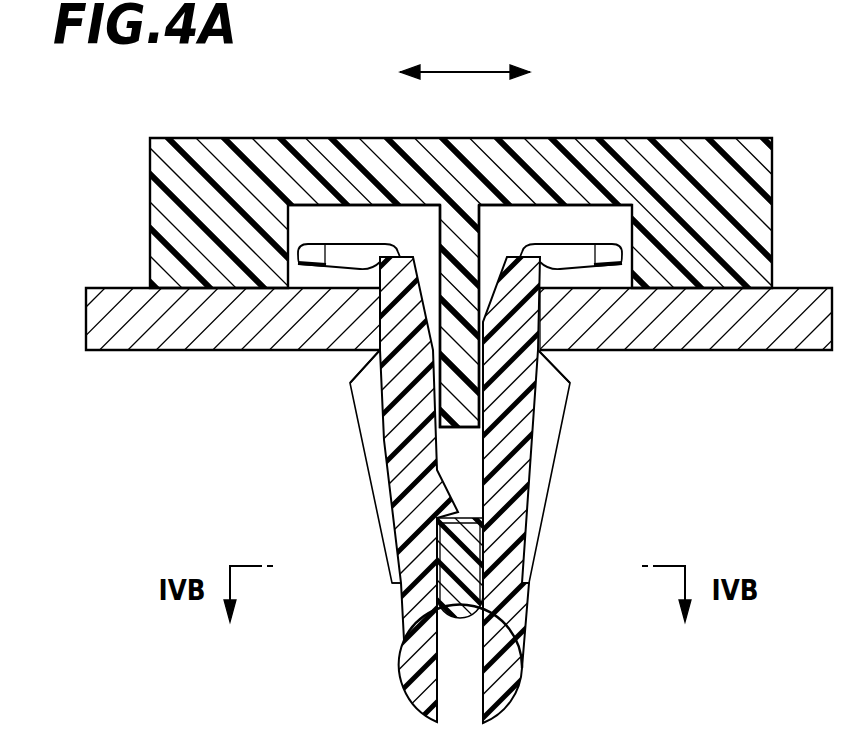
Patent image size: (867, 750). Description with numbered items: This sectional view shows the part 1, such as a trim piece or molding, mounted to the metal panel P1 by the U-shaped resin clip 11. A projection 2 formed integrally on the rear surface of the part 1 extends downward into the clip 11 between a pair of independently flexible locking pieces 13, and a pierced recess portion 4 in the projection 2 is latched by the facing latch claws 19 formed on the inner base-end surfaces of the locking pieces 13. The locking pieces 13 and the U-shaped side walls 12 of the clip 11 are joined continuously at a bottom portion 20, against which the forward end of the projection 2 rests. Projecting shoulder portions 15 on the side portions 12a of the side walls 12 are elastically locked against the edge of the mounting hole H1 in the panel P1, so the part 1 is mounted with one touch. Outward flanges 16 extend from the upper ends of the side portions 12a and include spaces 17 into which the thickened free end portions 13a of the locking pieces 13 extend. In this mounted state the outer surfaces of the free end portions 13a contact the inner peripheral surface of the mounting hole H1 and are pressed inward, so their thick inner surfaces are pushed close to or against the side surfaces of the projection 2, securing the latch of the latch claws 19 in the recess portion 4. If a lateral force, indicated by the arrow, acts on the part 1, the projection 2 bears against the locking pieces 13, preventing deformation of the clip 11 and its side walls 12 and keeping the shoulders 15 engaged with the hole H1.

The part 1 is at (650, 165).
The projection 2 is at (513, 680).
The pierced recess portion 4 is at (457, 455).
The resin clip 11 is at (433, 421).
The side walls 12 is at (433, 421).
The side portions 12a is at (376, 484).
The locking pieces 13 is at (385, 430).
The free end portions 13a is at (412, 257).
The projecting shoulder portions 15 is at (360, 370).
The outward flanges 16 is at (313, 243).
The spaces 17 is at (347, 243).
The latch claws 19 is at (383, 532).
The bottom portion 20 is at (458, 620).
The panel P1 is at (190, 327).
The mounting hole H1 is at (372, 308).